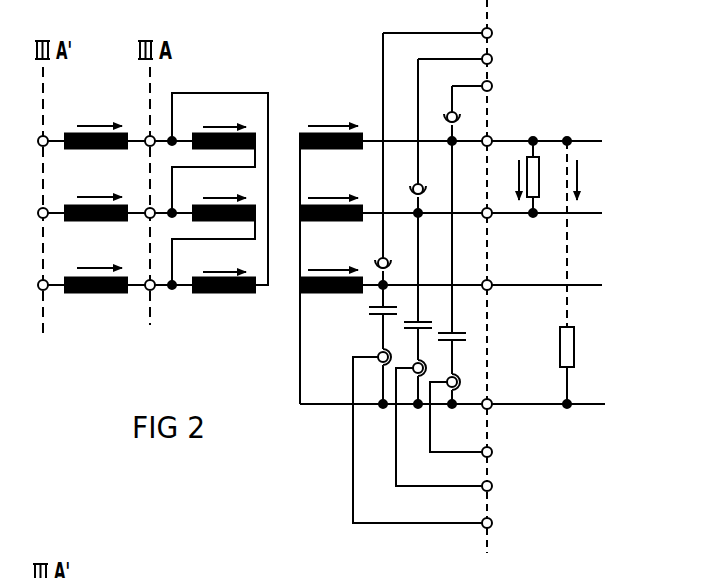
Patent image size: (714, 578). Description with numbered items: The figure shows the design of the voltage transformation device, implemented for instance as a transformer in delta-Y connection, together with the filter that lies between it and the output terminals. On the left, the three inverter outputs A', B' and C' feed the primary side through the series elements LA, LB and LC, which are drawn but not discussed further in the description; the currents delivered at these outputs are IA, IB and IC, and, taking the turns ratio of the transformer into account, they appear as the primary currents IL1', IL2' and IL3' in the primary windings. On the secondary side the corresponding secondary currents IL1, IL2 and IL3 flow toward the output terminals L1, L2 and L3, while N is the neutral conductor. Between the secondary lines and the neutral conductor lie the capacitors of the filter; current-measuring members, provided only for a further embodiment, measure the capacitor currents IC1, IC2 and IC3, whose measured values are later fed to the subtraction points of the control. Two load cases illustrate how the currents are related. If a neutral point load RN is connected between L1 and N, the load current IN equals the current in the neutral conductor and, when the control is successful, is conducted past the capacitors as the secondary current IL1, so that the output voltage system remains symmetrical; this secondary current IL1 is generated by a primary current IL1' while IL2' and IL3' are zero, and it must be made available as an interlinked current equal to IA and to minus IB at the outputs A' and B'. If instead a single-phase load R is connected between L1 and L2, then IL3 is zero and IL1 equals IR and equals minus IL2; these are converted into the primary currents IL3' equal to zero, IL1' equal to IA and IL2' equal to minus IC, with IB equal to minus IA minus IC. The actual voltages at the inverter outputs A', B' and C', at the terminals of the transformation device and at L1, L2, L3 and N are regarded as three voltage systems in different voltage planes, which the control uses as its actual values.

The inverter output A' is at (44, 139).
The inverter output B' is at (44, 211).
The inverter output C' is at (44, 282).
The inductor LA is at (107, 149).
The inductor LB is at (107, 221).
The inductor LC is at (107, 293).
The inverter output current IA is at (99, 112).
The inverter output current IB is at (99, 183).
The inverter output current IC is at (99, 254).
The primary current IL1' is at (224, 122).
The primary current IL2' is at (224, 194).
The primary current IL3' is at (224, 268).
The secondary current IL1 is at (331, 124).
The secondary current IL2 is at (331, 194).
The secondary current IL3 is at (331, 267).
The output terminal L1 is at (495, 140).
The output terminal L2 is at (495, 212).
The output terminal L3 is at (495, 284).
The neutral conductor N is at (461, 403).
The capacitor current IC1 is at (477, 423).
The capacitor current IC2 is at (460, 433).
The capacitor current IC3 is at (439, 446).
The single-phase load R is at (540, 172).
The load current IR is at (509, 180).
The load current IN is at (586, 234).
The neutral point load RN is at (581, 365).